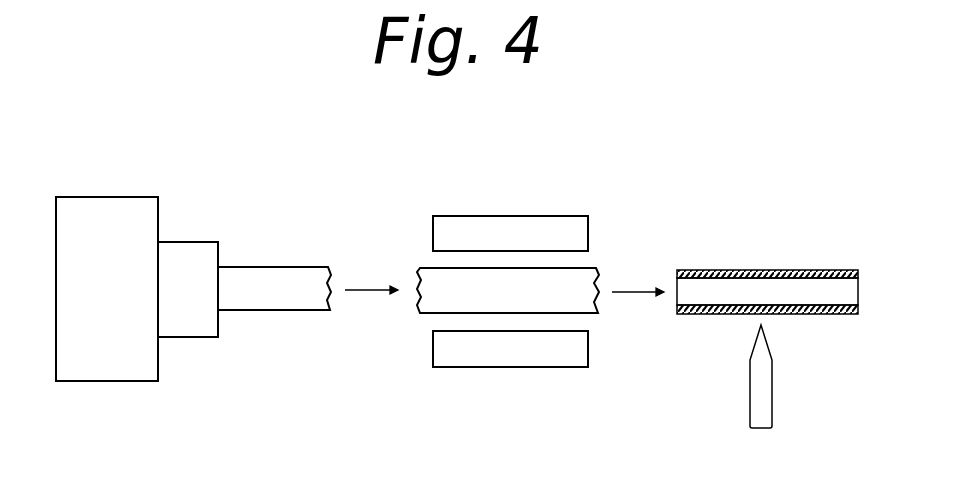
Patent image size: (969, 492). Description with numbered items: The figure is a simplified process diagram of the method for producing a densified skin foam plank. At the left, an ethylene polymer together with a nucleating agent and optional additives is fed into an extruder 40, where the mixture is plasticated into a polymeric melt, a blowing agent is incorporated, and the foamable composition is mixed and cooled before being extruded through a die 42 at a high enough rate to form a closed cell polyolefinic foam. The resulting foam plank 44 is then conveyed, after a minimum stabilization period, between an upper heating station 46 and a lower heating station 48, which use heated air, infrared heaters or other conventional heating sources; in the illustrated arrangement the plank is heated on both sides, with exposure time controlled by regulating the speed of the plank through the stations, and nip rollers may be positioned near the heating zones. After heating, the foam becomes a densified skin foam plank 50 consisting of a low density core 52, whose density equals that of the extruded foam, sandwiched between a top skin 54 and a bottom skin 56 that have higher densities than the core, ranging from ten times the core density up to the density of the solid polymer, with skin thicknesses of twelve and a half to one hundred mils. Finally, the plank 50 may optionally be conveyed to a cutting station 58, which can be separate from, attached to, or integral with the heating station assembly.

The extruder 40 is at (121, 294).
The die 42 is at (195, 242).
The foam plank 44 is at (300, 267).
The upper heating station 46 is at (504, 216).
The lower heating station 48 is at (497, 367).
The densified skin foam plank 50 is at (754, 278).
The low density core 52 is at (697, 293).
The top skin 54 is at (815, 270).
The bottom skin 56 is at (815, 314).
The cutting station 58 is at (748, 380).